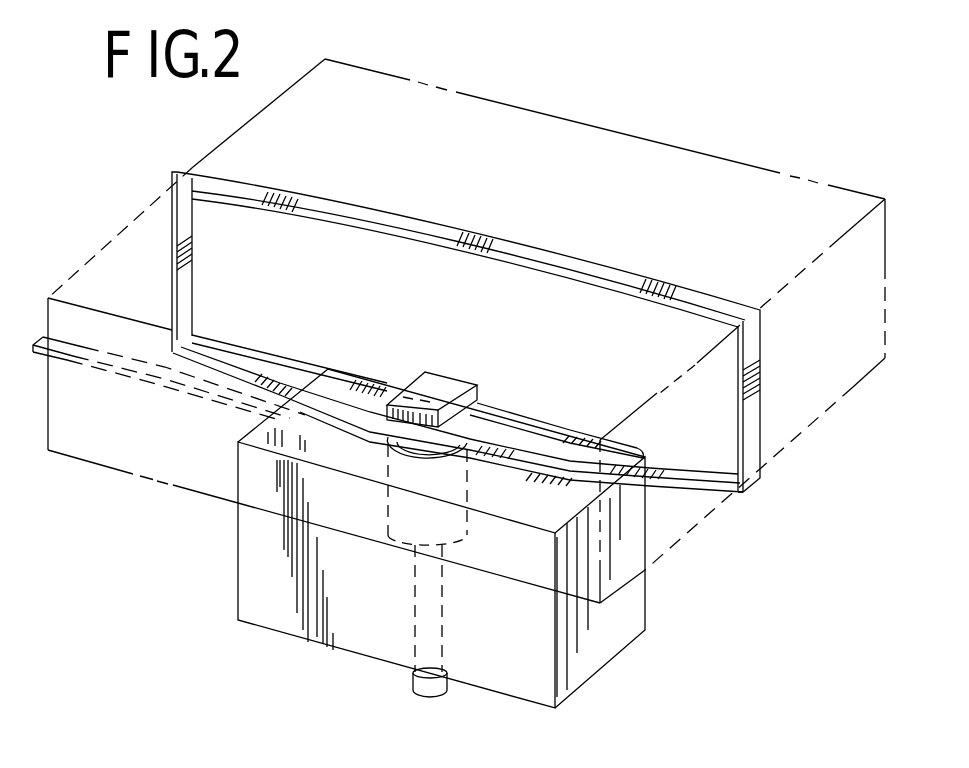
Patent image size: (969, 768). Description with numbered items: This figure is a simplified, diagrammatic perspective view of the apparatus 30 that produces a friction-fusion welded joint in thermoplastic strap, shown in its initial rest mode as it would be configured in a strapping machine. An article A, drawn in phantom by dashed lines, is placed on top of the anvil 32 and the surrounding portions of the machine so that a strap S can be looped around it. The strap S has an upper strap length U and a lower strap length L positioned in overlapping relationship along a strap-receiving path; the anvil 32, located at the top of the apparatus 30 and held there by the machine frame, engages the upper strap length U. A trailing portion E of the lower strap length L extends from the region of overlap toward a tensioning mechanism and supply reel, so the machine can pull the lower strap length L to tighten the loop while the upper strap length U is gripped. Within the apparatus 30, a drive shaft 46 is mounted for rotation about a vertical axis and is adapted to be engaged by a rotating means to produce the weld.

The article A is at (133, 224).
The strap S is at (170, 166).
The trailing portion E is at (97, 367).
The upper strap length U is at (458, 422).
The lower strap length L is at (460, 452).
The apparatus 30 is at (222, 540).
The anvil 32 is at (437, 372).
The drive shaft 46 is at (380, 528).